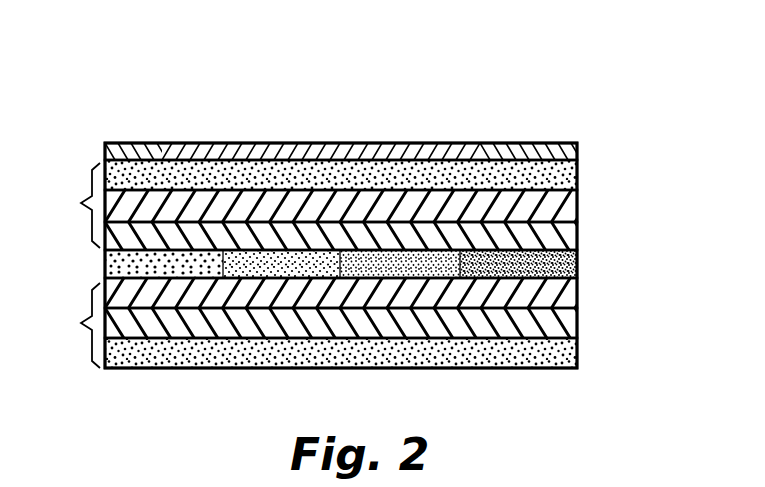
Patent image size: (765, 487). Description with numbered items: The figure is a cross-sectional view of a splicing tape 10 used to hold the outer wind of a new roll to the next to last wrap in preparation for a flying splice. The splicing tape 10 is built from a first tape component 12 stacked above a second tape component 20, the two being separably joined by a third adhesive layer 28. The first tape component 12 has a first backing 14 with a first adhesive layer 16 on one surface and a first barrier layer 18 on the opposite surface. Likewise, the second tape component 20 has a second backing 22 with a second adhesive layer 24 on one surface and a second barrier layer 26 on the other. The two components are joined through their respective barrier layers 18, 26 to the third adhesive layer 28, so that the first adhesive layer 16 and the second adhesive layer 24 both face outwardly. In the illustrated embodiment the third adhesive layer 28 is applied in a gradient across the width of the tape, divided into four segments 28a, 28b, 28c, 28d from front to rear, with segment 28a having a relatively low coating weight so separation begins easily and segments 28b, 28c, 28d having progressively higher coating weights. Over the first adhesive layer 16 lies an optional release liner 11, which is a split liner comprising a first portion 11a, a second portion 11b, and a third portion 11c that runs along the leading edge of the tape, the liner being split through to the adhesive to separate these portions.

The splicing tape 10 is at (198, 100).
The release liner 11 is at (563, 135).
The first portion of the release liner 11a is at (506, 143).
The second portion of the release liner 11b is at (328, 143).
The third portion of the release liner 11c is at (139, 143).
The first tape component 12 is at (71, 205).
The first backing 14 is at (560, 205).
The first adhesive layer 16 is at (571, 177).
The first barrier layer 18 is at (557, 242).
The second tape component 20 is at (71, 325).
The second backing 22 is at (560, 320).
The second adhesive layer 24 is at (562, 370).
The second barrier layer 26 is at (560, 303).
The third adhesive layer 28 is at (584, 264).
The first segment of the third adhesive layer 28a is at (150, 268).
The second segment of the third adhesive layer 28b is at (265, 270).
The third segment of the third adhesive layer 28c is at (395, 270).
The fourth segment of the third adhesive layer 28d is at (523, 270).